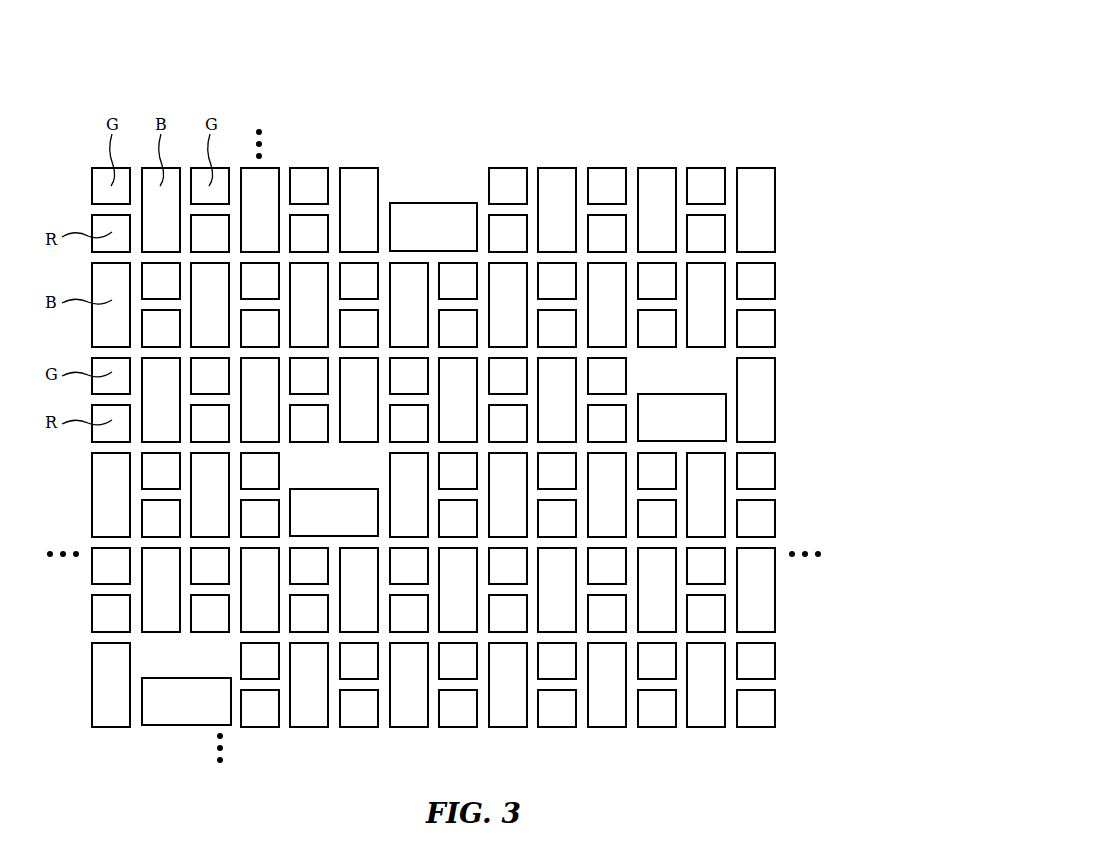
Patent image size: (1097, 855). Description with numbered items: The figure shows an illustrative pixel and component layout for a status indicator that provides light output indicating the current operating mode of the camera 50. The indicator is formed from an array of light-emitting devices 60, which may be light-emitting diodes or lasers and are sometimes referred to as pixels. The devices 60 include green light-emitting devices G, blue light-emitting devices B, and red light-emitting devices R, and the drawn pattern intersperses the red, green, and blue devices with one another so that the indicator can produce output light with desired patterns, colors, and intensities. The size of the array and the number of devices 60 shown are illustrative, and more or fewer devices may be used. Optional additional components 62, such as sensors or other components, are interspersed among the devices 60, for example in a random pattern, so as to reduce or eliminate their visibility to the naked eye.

The camera 50 is at (626, 60).
The light-emitting devices 60 is at (755, 210).
The additional components 62 is at (432, 203).